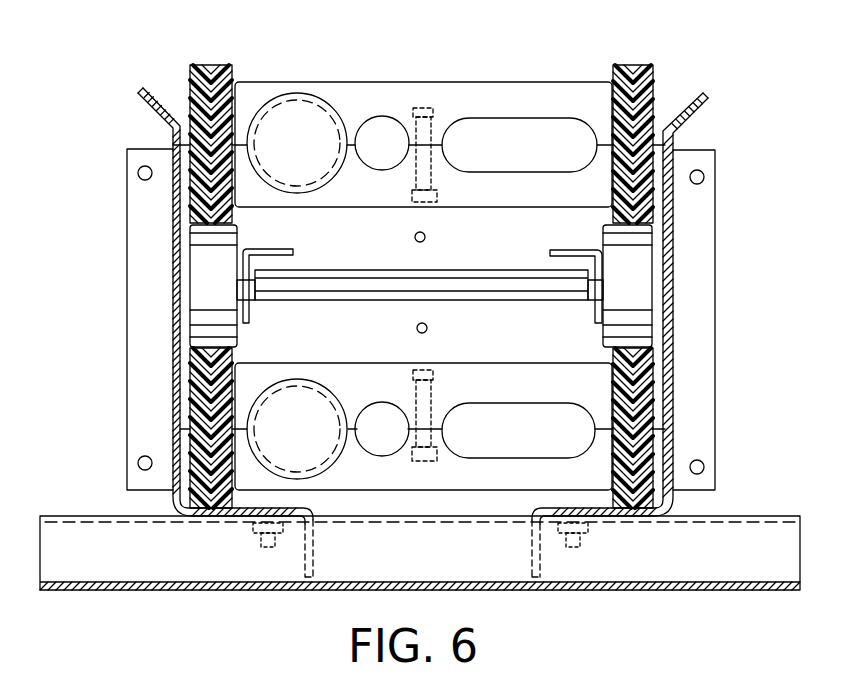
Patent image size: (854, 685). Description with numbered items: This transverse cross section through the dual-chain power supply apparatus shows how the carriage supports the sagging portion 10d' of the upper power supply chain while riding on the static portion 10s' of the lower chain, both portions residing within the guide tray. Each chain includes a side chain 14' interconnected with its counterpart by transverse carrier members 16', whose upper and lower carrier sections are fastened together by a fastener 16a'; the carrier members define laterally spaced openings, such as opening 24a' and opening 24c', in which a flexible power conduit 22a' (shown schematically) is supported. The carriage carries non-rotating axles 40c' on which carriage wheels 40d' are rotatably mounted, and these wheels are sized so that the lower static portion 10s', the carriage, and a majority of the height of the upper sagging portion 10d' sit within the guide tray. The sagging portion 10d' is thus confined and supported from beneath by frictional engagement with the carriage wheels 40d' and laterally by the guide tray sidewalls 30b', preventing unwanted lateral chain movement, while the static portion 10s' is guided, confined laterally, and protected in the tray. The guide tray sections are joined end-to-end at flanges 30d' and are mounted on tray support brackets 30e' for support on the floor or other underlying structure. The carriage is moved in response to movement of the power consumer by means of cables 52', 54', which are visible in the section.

The sagging portion 10d' is at (456, 109).
The static portion 10s' is at (420, 576).
The side chain 14' is at (456, 271).
The transverse carrier member 16' is at (543, 329).
The fastener 16a' is at (381, 392).
The flexible power conduit 22a' is at (235, 251).
The opening 24a' is at (419, 341).
The opening 24c' is at (490, 426).
The guide tray sidewall 30b' is at (417, 332).
The flange 30d' is at (387, 319).
The tray support bracket 30e' is at (420, 575).
The non-rotating axle 40c' is at (420, 259).
The carriage wheel 40d' is at (431, 286).
The cable 52' is at (459, 324).
The cable 54' is at (458, 234).